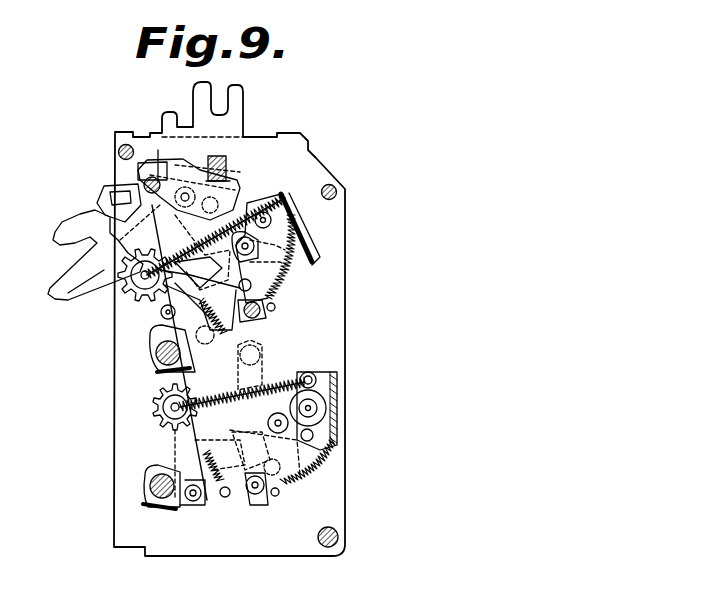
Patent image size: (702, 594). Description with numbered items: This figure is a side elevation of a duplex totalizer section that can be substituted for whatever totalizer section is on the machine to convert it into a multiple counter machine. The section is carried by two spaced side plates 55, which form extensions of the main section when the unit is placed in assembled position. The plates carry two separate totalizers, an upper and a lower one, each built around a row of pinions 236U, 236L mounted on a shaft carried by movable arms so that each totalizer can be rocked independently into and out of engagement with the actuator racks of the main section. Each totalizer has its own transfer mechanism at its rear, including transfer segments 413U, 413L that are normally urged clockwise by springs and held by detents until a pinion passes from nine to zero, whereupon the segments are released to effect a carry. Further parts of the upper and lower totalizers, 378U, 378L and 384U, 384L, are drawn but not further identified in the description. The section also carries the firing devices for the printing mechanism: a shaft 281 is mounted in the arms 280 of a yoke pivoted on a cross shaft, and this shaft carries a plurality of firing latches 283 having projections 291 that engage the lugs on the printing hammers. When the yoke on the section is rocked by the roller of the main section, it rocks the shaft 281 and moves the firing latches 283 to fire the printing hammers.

The side plates 55 is at (350, 207).
The arms of yoke 280 is at (253, 165).
The shaft 281 is at (127, 180).
The firing latches 283 is at (78, 268).
The projections 291 is at (107, 212).
The pinions 236U is at (132, 297).
The pinions 236L is at (157, 402).
The upper link 378U is at (155, 350).
The lower link 378L is at (158, 480).
The upper bracket 384U is at (296, 210).
The lower bracket 384L is at (337, 408).
The transfer segments 413U is at (192, 258).
The transfer segments 413L is at (273, 398).